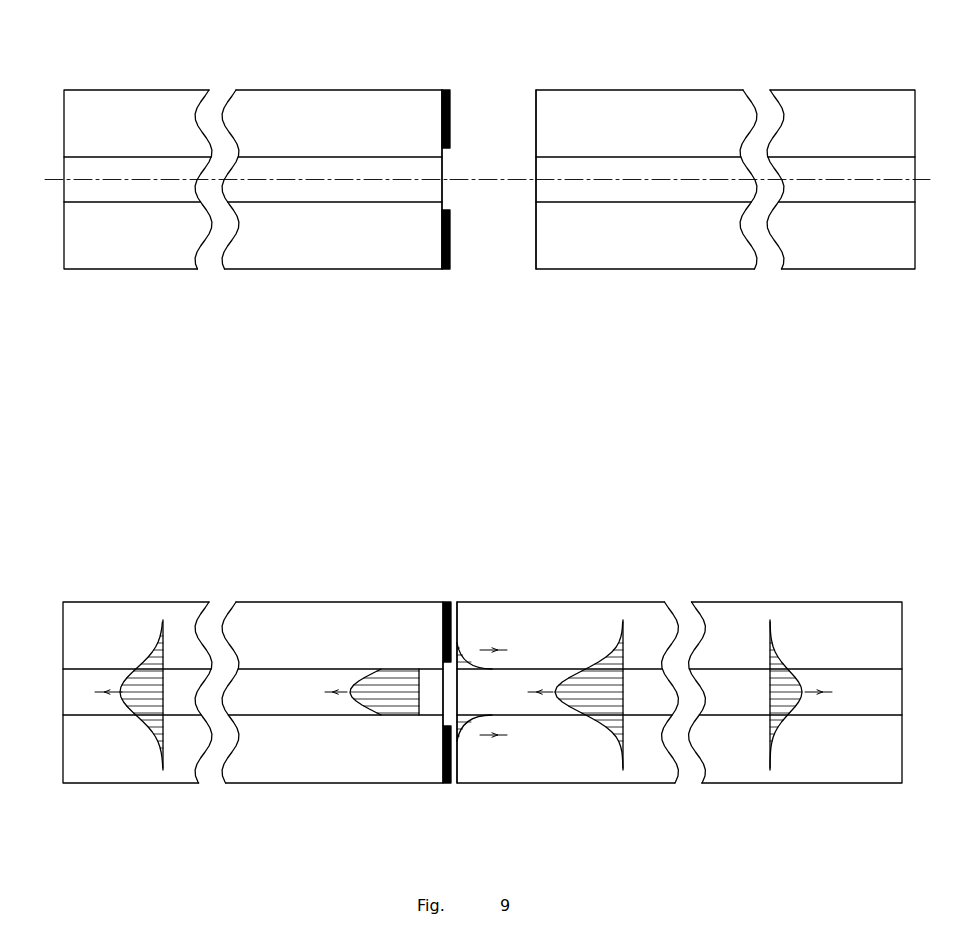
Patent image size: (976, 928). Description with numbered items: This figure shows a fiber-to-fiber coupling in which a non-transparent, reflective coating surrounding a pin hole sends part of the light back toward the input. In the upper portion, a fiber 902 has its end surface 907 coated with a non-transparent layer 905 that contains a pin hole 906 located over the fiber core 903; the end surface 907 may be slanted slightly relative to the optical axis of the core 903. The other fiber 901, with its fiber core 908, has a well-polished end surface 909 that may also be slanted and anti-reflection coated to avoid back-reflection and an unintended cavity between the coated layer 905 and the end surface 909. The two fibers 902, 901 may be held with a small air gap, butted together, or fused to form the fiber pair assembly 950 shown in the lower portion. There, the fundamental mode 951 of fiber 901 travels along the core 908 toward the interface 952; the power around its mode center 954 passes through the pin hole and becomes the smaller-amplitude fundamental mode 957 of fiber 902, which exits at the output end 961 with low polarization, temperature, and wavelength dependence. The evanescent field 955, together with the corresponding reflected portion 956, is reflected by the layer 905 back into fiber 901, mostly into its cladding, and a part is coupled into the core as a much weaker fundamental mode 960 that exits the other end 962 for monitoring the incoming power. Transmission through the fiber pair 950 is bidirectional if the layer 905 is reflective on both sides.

The fiber 901 is at (703, 80).
The fiber 902 is at (278, 82).
The fiber core 903 is at (335, 173).
The non-transparent layer 905 is at (452, 110).
The pin hole 906 is at (453, 175).
The end surface 907 is at (441, 117).
The fiber core 908 is at (654, 173).
The end surface 909 is at (534, 113).
The fiber pair assembly 950 is at (475, 530).
The fundamental mode 951 is at (598, 658).
The interface 952 is at (452, 788).
The mode center 954 is at (363, 710).
The evanescent field 955 is at (470, 645).
The lower cladding mode portion 956 is at (468, 738).
The fundamental mode 957 is at (155, 645).
The fundamental mode 960 is at (777, 647).
The output end 961 is at (60, 648).
The other end 962 is at (904, 648).